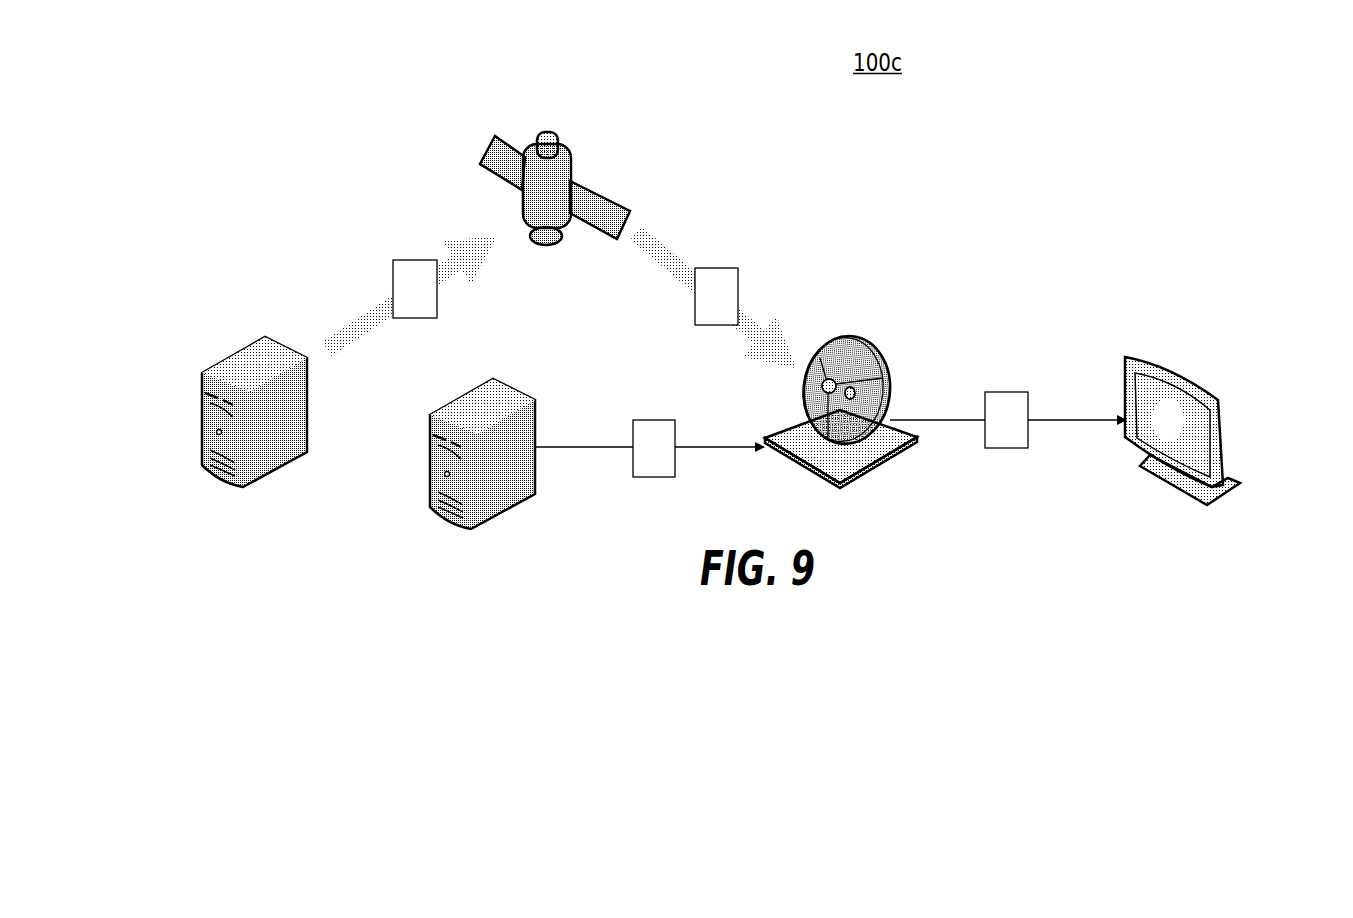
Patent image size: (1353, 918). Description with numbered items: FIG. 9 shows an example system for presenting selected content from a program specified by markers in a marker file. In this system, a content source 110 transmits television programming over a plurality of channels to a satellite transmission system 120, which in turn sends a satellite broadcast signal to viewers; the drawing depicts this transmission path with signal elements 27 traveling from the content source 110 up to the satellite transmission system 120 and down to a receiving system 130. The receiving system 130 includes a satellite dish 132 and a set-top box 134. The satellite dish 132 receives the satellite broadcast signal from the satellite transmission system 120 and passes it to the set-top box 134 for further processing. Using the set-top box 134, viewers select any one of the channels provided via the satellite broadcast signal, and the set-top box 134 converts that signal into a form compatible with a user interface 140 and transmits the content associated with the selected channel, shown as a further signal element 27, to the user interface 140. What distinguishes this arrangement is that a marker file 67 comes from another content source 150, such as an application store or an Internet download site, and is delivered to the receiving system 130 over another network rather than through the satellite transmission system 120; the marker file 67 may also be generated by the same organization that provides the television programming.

The content source 110 is at (242, 345).
The satellite transmission system 120 is at (542, 130).
The content data / signal 27 is at (393, 277).
The receiving system 130 is at (899, 406).
The satellite dish 132 is at (892, 397).
The set-top box 134 is at (887, 463).
The user interface 140 is at (1225, 428).
The another content source 150 is at (430, 450).
The marker file 67 is at (648, 477).